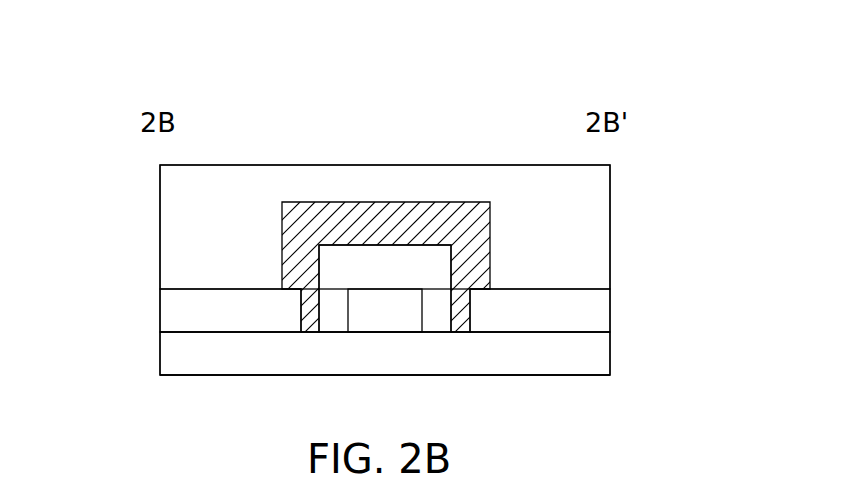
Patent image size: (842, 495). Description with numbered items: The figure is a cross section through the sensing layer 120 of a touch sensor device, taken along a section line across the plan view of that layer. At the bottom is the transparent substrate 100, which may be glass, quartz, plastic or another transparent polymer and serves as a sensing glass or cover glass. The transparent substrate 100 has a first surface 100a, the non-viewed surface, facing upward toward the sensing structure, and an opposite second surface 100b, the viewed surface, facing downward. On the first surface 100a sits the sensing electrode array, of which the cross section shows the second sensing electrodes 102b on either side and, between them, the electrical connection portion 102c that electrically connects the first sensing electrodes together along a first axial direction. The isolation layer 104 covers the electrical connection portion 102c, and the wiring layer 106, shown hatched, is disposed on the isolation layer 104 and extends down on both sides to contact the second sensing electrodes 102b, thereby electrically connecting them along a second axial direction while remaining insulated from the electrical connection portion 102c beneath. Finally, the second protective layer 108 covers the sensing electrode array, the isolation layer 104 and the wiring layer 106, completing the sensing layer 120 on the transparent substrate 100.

The transparent substrate 100 is at (603, 355).
The first surface 100a is at (580, 330).
The second surface 100b is at (210, 382).
The second sensing electrodes 102b is at (168, 306).
The electrical connection portion 102c is at (384, 322).
The isolation layer 104 is at (433, 263).
The wiring layer 106 is at (283, 216).
The second protective layer 108 is at (603, 182).
The sensing layer 120 is at (282, 134).